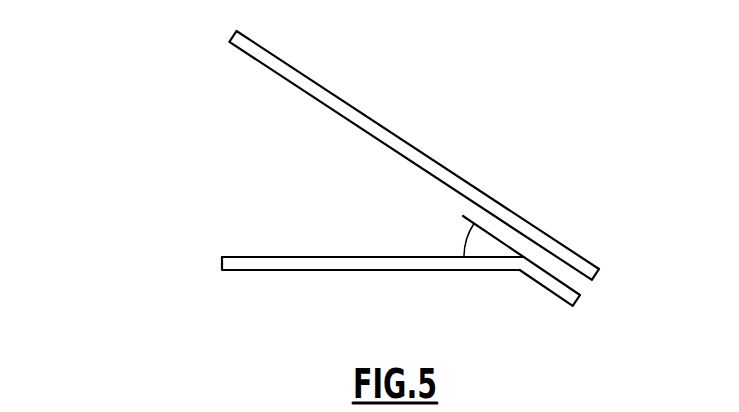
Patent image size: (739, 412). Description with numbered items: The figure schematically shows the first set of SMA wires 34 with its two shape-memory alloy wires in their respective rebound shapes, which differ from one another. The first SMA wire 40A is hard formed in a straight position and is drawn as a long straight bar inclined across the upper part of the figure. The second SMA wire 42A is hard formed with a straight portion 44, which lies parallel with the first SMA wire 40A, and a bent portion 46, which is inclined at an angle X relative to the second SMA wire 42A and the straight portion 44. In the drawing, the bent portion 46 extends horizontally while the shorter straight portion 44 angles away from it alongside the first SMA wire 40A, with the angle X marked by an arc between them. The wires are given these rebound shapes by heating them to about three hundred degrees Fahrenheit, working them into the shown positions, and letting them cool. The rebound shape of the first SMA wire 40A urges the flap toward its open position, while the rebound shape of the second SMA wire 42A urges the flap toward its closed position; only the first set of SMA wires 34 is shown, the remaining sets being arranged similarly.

The first set of SMA wires 34 is at (322, 185).
The first SMA wire 40A is at (356, 84).
The second SMA wire 42A is at (278, 289).
The straight portion 44 is at (548, 289).
The bent portion 46 is at (380, 264).
The angle X is at (465, 237).